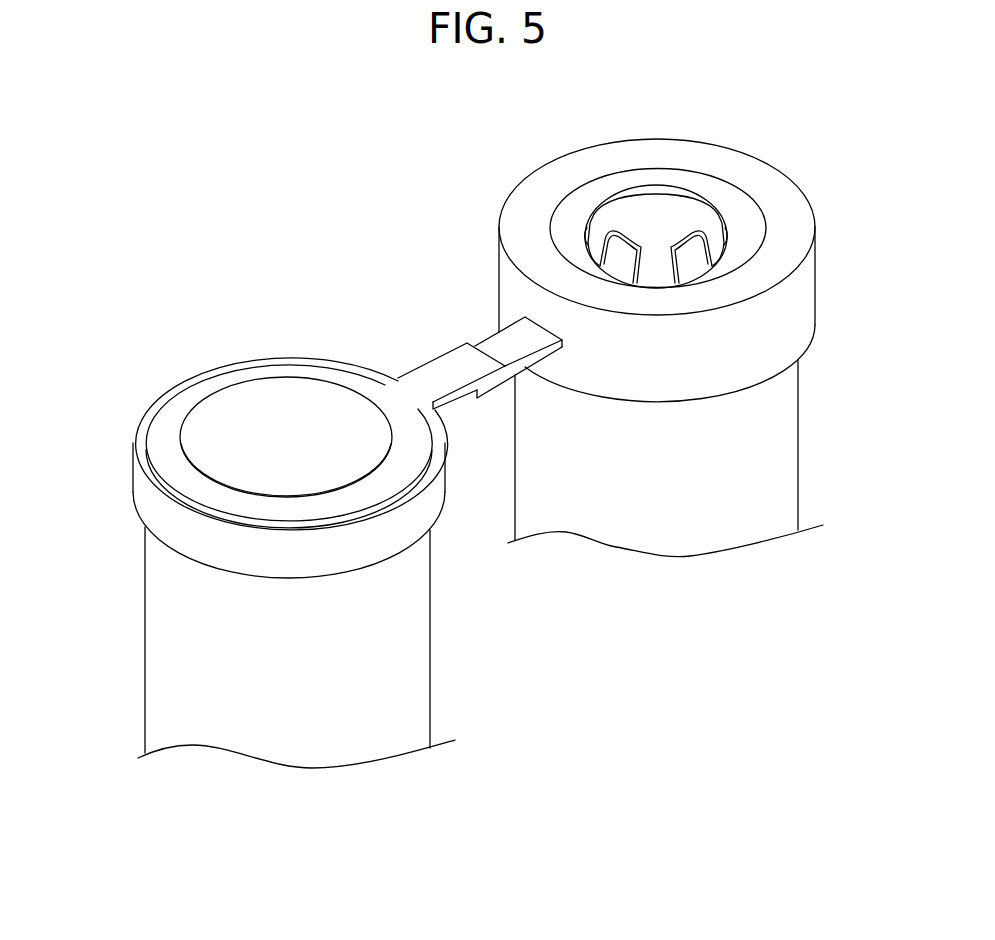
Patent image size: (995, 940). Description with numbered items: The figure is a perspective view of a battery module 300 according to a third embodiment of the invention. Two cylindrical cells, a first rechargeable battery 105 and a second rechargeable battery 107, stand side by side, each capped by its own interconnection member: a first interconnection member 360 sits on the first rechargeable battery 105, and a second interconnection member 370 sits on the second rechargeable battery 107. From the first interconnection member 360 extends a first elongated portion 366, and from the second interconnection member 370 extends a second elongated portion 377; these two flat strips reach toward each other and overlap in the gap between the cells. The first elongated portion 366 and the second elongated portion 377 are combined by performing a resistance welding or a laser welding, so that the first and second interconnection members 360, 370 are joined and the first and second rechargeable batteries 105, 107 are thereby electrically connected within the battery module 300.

The battery module 300 is at (472, 102).
The first interconnection member 360 is at (778, 167).
The second interconnection member 370 is at (278, 357).
The first elongated portion 366 is at (495, 345).
The second elongated portion 377 is at (435, 372).
The first rechargeable battery 105 is at (800, 448).
The second rechargeable battery 107 is at (140, 595).